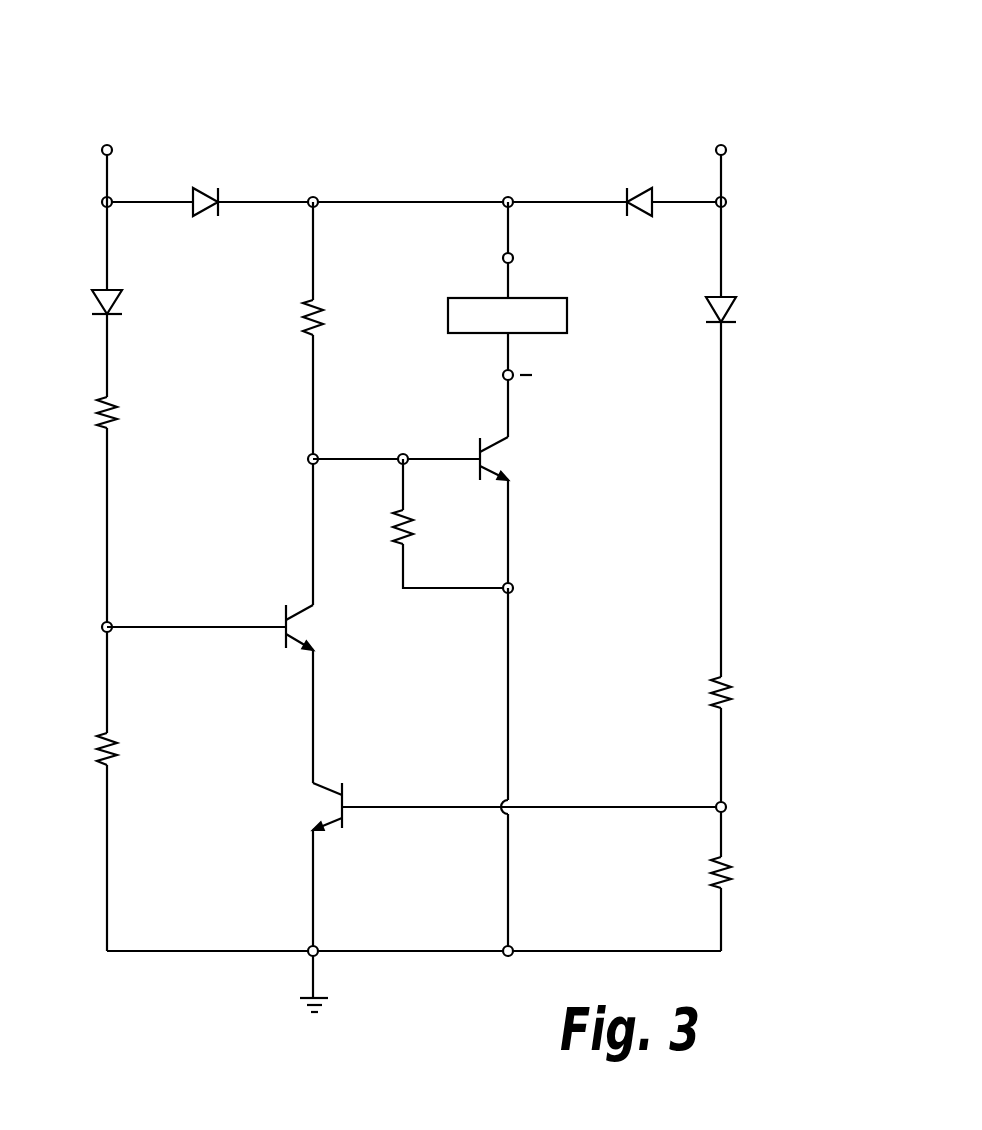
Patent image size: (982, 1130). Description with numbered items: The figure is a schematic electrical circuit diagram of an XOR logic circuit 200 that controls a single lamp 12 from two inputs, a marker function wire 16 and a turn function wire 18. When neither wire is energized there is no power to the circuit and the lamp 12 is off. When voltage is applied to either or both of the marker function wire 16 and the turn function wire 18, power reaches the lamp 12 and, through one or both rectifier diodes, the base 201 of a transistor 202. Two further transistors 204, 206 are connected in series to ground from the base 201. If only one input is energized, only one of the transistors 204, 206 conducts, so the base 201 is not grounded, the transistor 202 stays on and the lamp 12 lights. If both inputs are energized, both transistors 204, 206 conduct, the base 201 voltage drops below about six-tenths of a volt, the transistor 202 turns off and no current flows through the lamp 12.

The lamp 12 is at (567, 312).
The marker function wire 16 is at (721, 170).
The turn function wire 18 is at (107, 170).
The XOR logic circuit 200 is at (605, 76).
The base 201 is at (433, 457).
The transistor 202 is at (572, 455).
The transistor 204 is at (378, 630).
The transistor 206 is at (235, 808).